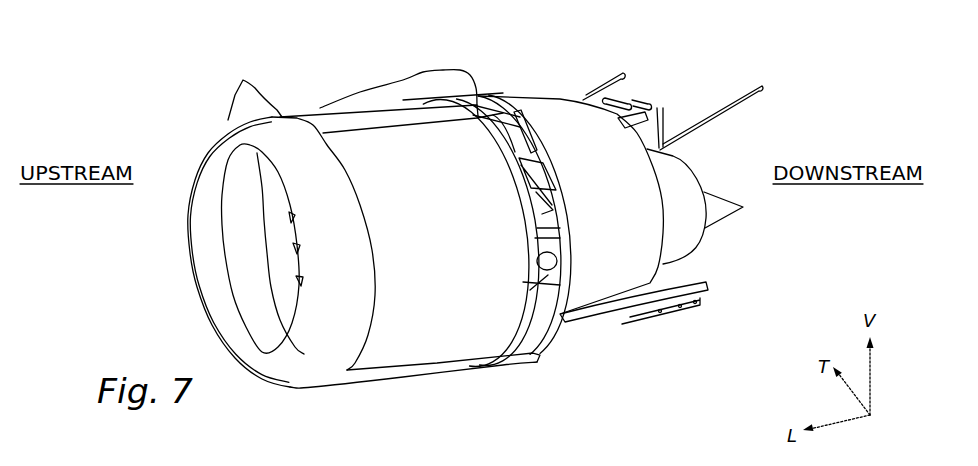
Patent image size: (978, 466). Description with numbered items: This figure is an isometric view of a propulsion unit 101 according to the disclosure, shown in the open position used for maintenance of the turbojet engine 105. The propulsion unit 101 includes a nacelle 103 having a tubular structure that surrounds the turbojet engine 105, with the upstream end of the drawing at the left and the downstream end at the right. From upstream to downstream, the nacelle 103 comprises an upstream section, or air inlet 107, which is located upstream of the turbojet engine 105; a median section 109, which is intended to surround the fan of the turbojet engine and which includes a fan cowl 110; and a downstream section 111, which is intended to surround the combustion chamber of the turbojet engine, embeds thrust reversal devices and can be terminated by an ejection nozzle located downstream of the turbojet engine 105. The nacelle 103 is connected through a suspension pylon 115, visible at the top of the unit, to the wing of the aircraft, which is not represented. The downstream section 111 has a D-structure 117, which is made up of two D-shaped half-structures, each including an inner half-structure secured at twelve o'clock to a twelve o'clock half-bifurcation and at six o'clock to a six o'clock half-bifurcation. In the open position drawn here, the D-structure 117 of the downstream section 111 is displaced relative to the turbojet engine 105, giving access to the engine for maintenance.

The propulsion unit 101 is at (206, 58).
The nacelle 103 is at (499, 334).
The turbojet engine 105 is at (730, 216).
The air inlet 107 is at (218, 125).
The median section 109 is at (467, 343).
The fan cowl 110 is at (440, 322).
The downstream section 111 is at (601, 296).
The suspension pylon 115 is at (665, 104).
The D-structure 117 is at (644, 276).